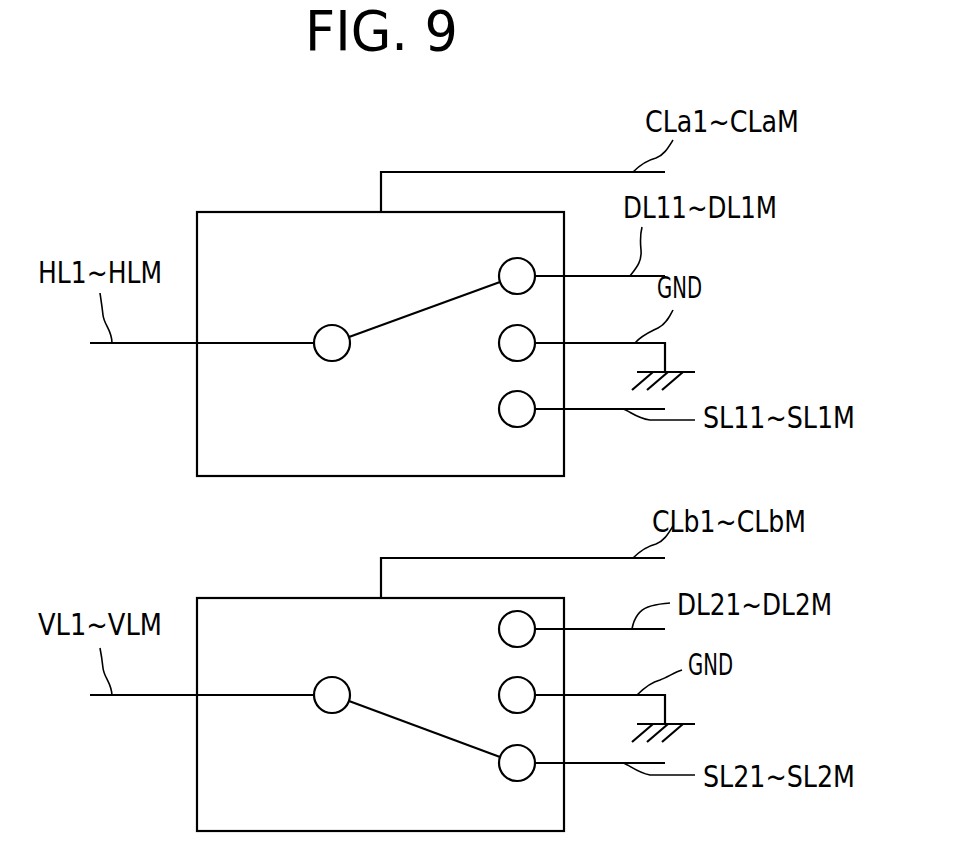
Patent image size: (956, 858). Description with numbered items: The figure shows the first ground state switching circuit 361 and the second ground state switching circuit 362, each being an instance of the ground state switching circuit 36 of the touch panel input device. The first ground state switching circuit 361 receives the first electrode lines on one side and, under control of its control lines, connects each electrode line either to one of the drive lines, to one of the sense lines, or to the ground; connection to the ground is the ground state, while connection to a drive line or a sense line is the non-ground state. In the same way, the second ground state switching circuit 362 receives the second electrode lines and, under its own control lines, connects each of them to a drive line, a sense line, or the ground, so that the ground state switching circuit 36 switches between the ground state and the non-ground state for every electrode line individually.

The ground state switching circuit 36 is at (392, 495).
The first ground state switching circuit 361 is at (265, 212).
The second ground state switching circuit 362 is at (265, 598).